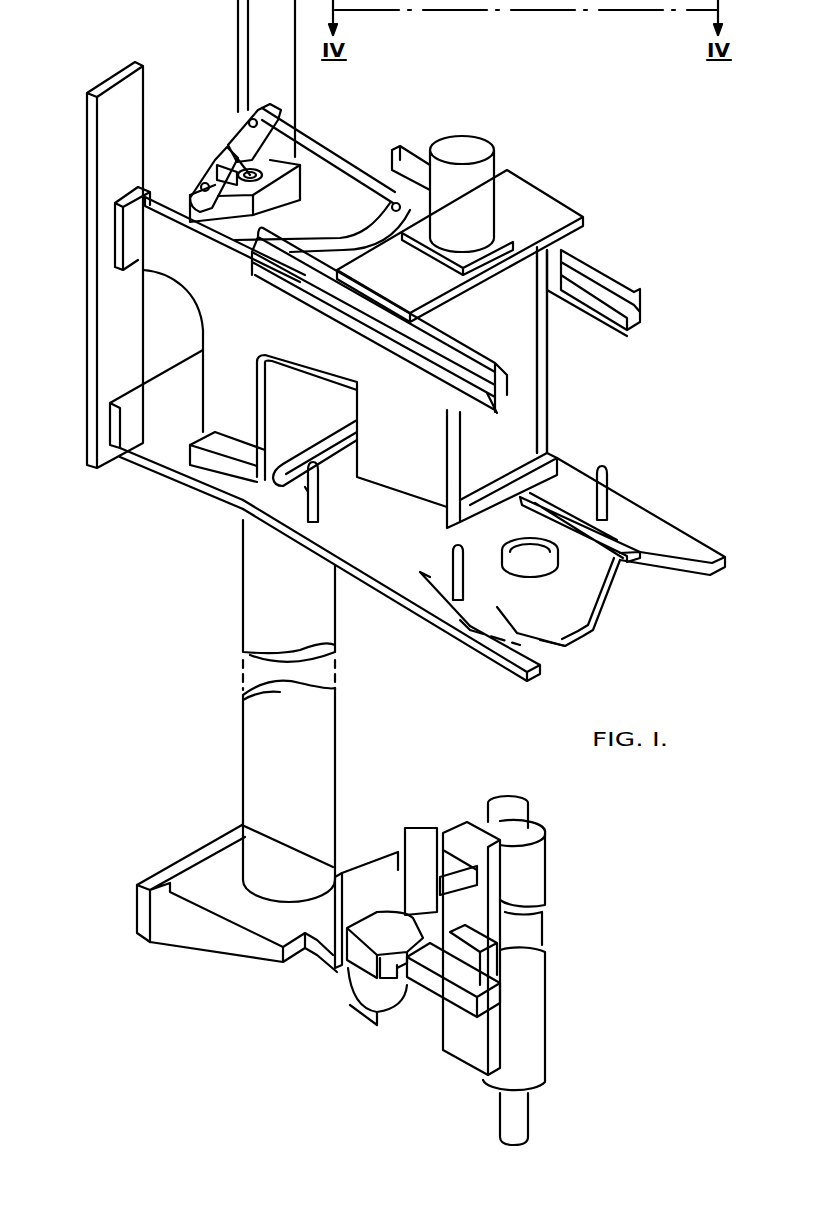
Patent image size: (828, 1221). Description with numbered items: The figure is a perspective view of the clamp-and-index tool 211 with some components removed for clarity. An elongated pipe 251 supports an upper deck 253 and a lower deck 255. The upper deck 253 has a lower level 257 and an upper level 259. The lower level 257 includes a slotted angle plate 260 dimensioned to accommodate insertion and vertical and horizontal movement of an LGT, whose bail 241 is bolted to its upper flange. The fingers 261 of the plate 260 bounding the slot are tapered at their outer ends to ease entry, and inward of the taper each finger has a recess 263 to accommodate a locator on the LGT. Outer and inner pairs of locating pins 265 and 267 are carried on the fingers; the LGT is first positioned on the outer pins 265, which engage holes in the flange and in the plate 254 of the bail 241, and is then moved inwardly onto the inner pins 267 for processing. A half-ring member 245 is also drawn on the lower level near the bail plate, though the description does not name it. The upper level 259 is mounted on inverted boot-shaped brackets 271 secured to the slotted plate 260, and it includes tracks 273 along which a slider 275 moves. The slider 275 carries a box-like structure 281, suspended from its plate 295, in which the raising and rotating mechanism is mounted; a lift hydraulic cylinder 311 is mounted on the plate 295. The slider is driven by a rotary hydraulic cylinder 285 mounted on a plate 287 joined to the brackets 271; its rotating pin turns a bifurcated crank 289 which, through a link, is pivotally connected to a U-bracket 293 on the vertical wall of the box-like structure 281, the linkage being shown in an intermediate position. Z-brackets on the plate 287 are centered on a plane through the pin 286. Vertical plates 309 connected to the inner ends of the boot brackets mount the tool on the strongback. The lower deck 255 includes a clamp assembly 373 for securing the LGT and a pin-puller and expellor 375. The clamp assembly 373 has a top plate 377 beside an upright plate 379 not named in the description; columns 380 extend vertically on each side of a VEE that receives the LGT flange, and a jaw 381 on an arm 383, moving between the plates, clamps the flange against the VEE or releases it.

The clamp-and-index tool 211 is at (225, 609).
The bail 241 is at (575, 566).
The half ring guide 245 is at (540, 575).
The elongated pipe 251 is at (255, 750).
The upper deck 253 is at (556, 337).
The plate of the bail 254 is at (578, 632).
The lower deck 255 is at (258, 956).
The lower level 257 is at (458, 650).
The upper level 259 is at (372, 168).
The slotted angle plate 260 is at (258, 495).
The fingers 261 is at (413, 590).
The recess 263 is at (640, 548).
The outer locating pins 265 is at (610, 480).
The inner locating pins 267 is at (330, 512).
The boot-shaped brackets 271 is at (262, 396).
The tracks 273 is at (618, 282).
The slider 275 is at (600, 180).
The box-like structure 281 is at (530, 388).
The rotary hydraulic cylinder 285 is at (300, 195).
The pin 286 is at (250, 125).
The plate 287 is at (292, 290).
The bifurcated crank 289 is at (222, 158).
The U-bracket 293 is at (390, 205).
The plate of the slider 295 is at (560, 212).
The vertical plates 309 is at (100, 180).
The lift hydraulic cylinder 311 is at (485, 163).
The clamp assembly 373 is at (408, 1014).
The pin-puller and expellor 375 is at (548, 1033).
The top plate 377 is at (240, 905).
The vertical plate 379 is at (360, 870).
The columns 380 is at (432, 806).
The jaw 381 is at (510, 992).
The arm 383 is at (437, 990).